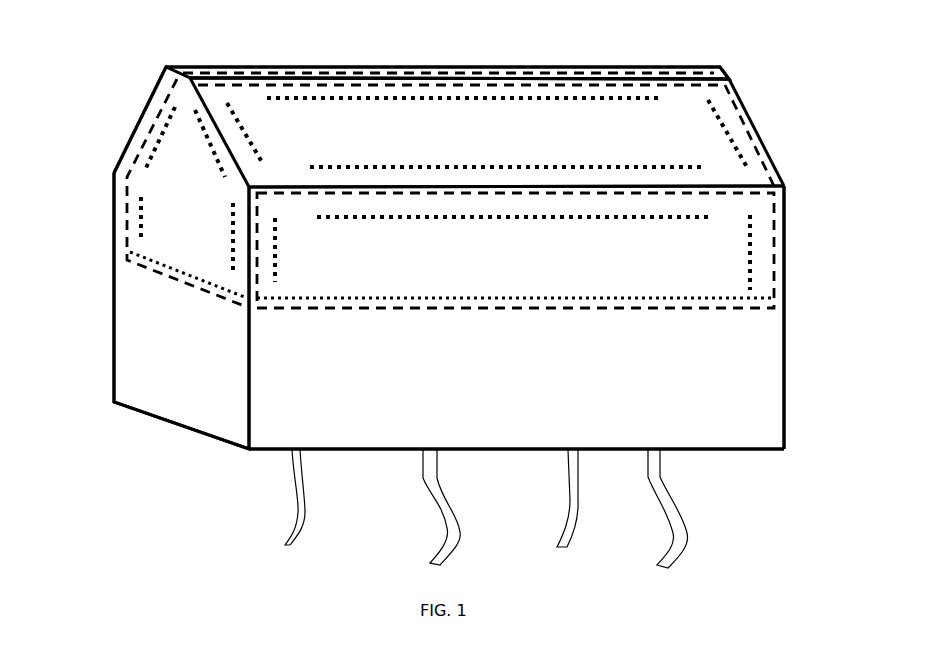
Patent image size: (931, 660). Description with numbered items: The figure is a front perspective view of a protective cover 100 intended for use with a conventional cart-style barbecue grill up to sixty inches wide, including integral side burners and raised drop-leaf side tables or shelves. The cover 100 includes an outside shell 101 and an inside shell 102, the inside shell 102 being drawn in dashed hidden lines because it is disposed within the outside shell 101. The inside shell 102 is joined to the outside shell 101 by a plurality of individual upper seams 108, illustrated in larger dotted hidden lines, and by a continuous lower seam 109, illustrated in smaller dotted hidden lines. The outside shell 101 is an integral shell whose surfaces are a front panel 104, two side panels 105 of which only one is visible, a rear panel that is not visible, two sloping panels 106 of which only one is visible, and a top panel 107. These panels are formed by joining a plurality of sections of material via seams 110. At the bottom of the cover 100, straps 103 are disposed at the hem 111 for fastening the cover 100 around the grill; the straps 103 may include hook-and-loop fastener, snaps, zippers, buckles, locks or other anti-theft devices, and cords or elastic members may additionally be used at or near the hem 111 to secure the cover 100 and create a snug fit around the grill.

The protective cover 100 is at (126, 66).
The outside shell 101 is at (147, 107).
The inside shell 102 is at (150, 270).
The straps 103 is at (687, 533).
The front panel 104 is at (757, 375).
The side panels 105 is at (172, 412).
The sloping panels 106 is at (525, 137).
The top panel 107 is at (700, 68).
The upper seams 108 is at (275, 220).
The lower seam 109 is at (317, 302).
The seams 110 is at (770, 349).
The hem 111 is at (727, 451).